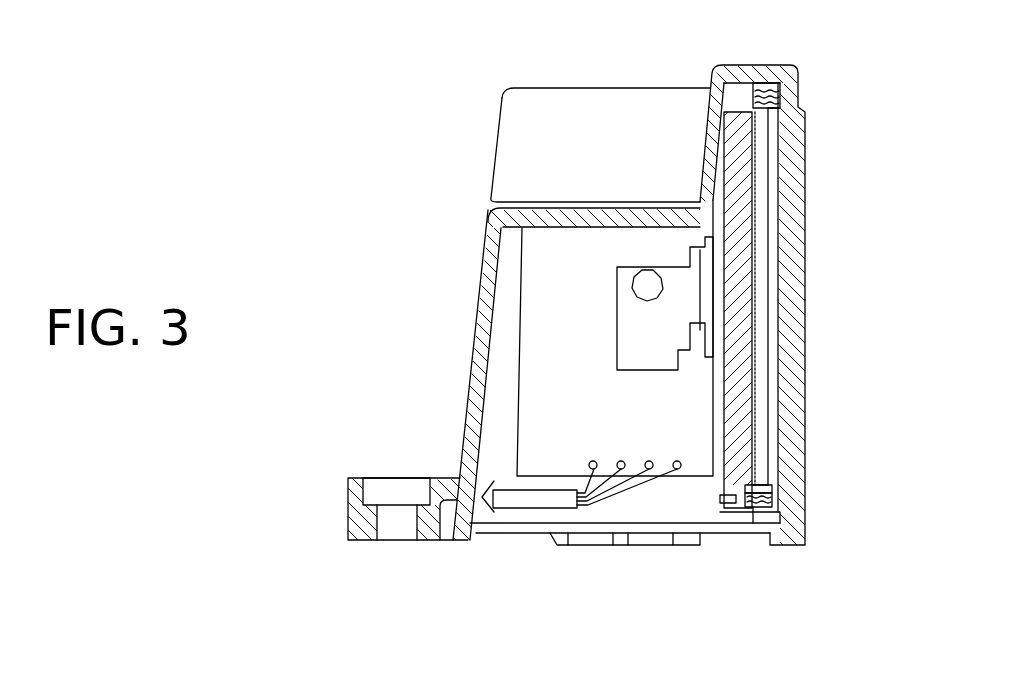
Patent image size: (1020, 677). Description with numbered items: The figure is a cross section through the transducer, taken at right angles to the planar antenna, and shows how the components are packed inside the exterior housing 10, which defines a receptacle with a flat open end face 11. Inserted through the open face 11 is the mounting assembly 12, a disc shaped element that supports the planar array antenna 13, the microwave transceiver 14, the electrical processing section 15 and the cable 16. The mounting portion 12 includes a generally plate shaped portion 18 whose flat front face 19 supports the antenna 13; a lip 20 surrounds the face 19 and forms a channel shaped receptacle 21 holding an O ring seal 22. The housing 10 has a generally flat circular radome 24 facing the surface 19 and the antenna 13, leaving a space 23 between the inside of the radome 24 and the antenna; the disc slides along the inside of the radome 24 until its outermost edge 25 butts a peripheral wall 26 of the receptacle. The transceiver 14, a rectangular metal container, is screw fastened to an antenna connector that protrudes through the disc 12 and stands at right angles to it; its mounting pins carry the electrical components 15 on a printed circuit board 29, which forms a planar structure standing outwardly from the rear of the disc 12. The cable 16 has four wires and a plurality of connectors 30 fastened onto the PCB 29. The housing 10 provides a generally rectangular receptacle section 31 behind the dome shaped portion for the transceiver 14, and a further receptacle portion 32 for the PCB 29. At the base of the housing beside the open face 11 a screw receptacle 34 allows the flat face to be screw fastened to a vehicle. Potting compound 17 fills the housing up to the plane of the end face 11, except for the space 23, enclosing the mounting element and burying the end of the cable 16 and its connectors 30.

The exterior housing 10 is at (745, 70).
The open end face 11 is at (763, 540).
The mounting assembly 12 is at (742, 427).
The planar array antenna 13 is at (772, 280).
The microwave transceiver 14 is at (630, 280).
The electrical processing section 15 is at (528, 252).
The cable 16 is at (523, 508).
The potting compound 17 is at (672, 518).
The plate shaped portion 18 is at (748, 145).
The flat front face 19 is at (753, 252).
The lip 20 is at (758, 487).
The channel shaped receptacle 21 is at (755, 507).
The O ring seal 22 is at (748, 499).
The space 23 is at (780, 177).
The radome 24 is at (790, 310).
The outermost edge of the disc 25 is at (762, 84).
The peripheral wall 26 is at (785, 73).
The printed circuit board 29 is at (537, 350).
The connectors 30 is at (596, 466).
The rectangular receptacle section 31 is at (530, 207).
The further receptacle portion 32 is at (572, 112).
The screw receptacle 34 is at (352, 542).